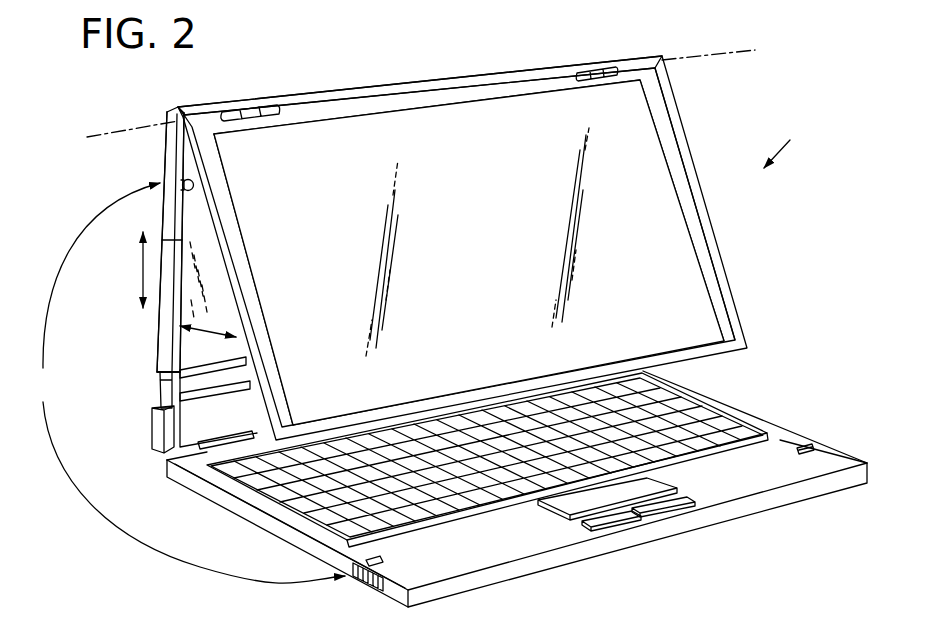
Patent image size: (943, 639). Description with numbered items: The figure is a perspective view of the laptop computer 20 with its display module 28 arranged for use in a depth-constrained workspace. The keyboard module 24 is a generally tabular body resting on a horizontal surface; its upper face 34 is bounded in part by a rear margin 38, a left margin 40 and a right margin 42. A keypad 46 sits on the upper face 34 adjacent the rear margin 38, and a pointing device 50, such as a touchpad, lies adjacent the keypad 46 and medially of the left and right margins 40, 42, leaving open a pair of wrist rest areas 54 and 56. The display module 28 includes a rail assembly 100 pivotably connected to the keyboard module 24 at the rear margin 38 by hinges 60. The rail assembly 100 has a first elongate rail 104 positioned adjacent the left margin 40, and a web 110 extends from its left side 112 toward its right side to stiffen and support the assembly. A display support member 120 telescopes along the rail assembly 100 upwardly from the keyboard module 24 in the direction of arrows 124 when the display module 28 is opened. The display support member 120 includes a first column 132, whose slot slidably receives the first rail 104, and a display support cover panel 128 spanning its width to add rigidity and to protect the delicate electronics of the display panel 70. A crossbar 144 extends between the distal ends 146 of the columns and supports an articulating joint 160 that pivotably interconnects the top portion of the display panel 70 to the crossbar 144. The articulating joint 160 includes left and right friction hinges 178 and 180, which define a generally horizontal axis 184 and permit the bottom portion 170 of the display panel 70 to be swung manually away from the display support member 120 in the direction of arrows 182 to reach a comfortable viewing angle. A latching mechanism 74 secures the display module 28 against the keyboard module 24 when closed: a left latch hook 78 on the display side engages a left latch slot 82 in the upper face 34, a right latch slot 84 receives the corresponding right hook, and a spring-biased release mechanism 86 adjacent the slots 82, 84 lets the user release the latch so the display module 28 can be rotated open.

The laptop computer 20 is at (790, 141).
The keyboard module 24 is at (792, 420).
The display module 28 is at (704, 137).
The upper face 34 is at (836, 460).
The rear margin 38 is at (187, 467).
The left margin 40 is at (293, 537).
The right margin 42 is at (730, 406).
The keypad 46 is at (682, 437).
The pointing device 50 is at (652, 483).
The wrist rest area 54 is at (473, 541).
The wrist rest area 56 is at (750, 476).
The hinges 60 is at (238, 438).
The display panel 70 is at (645, 208).
The latching mechanism 74 is at (187, 383).
The left latch hook 78 is at (194, 186).
The left latch slot 82 is at (372, 563).
The right latch slot 84 is at (808, 446).
The spring-biased release mechanism 86 is at (358, 580).
The rail assembly 100 is at (140, 412).
The first elongate rail 104 is at (165, 395).
The web 110 is at (218, 408).
The left side 112 is at (146, 438).
The display support member 120 is at (134, 242).
The arrows 124 is at (143, 266).
The display support cover panel 128 is at (198, 228).
The first column 132 is at (165, 313).
The crossbar 144 is at (333, 100).
The distal ends 146 is at (177, 110).
The articulating joint 160 is at (420, 67).
The bottom portion 170 is at (737, 342).
The left friction hinge 178 is at (254, 106).
The right friction hinge 180 is at (597, 47).
The arrows 182 is at (205, 326).
The horizontal axis 184 is at (113, 128).